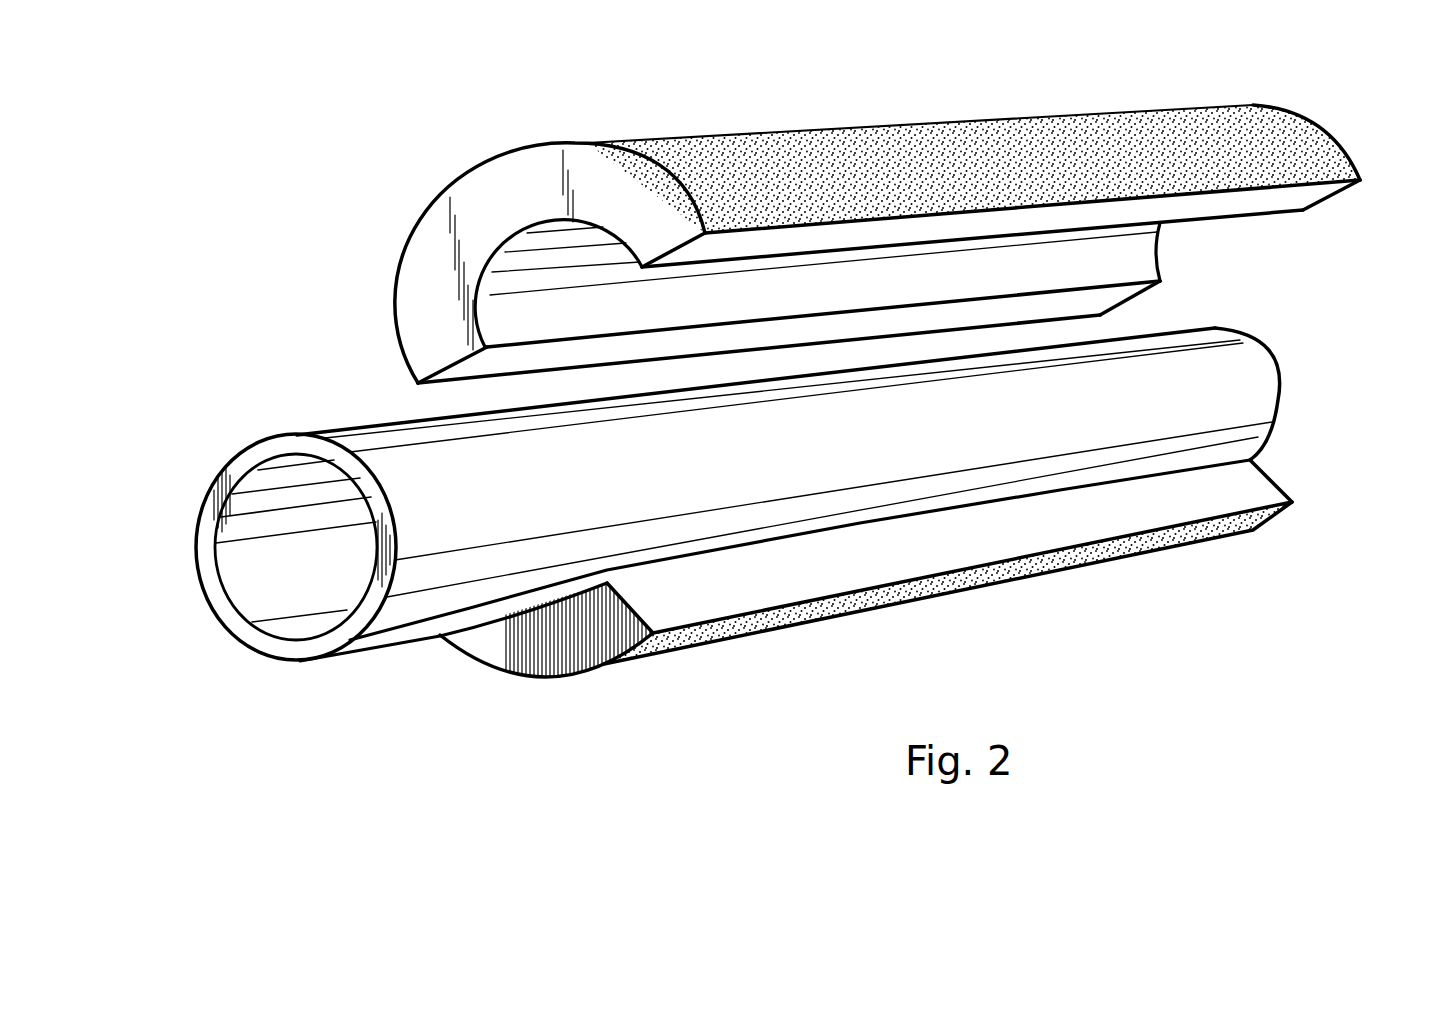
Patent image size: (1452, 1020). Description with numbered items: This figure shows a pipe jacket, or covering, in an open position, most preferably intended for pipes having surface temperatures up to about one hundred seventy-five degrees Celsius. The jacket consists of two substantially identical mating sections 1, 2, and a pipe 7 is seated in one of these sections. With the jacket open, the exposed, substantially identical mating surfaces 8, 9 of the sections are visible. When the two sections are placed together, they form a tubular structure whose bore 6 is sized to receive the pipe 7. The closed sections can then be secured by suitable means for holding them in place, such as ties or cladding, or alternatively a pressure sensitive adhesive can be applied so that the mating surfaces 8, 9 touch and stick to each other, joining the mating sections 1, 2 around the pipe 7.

The mating section 1 is at (433, 290).
The mating section 2 is at (1000, 572).
The bore 6 is at (1135, 247).
The pipe 7 is at (215, 603).
The mating surface 8 is at (1286, 197).
The mating surface 9 is at (810, 360).